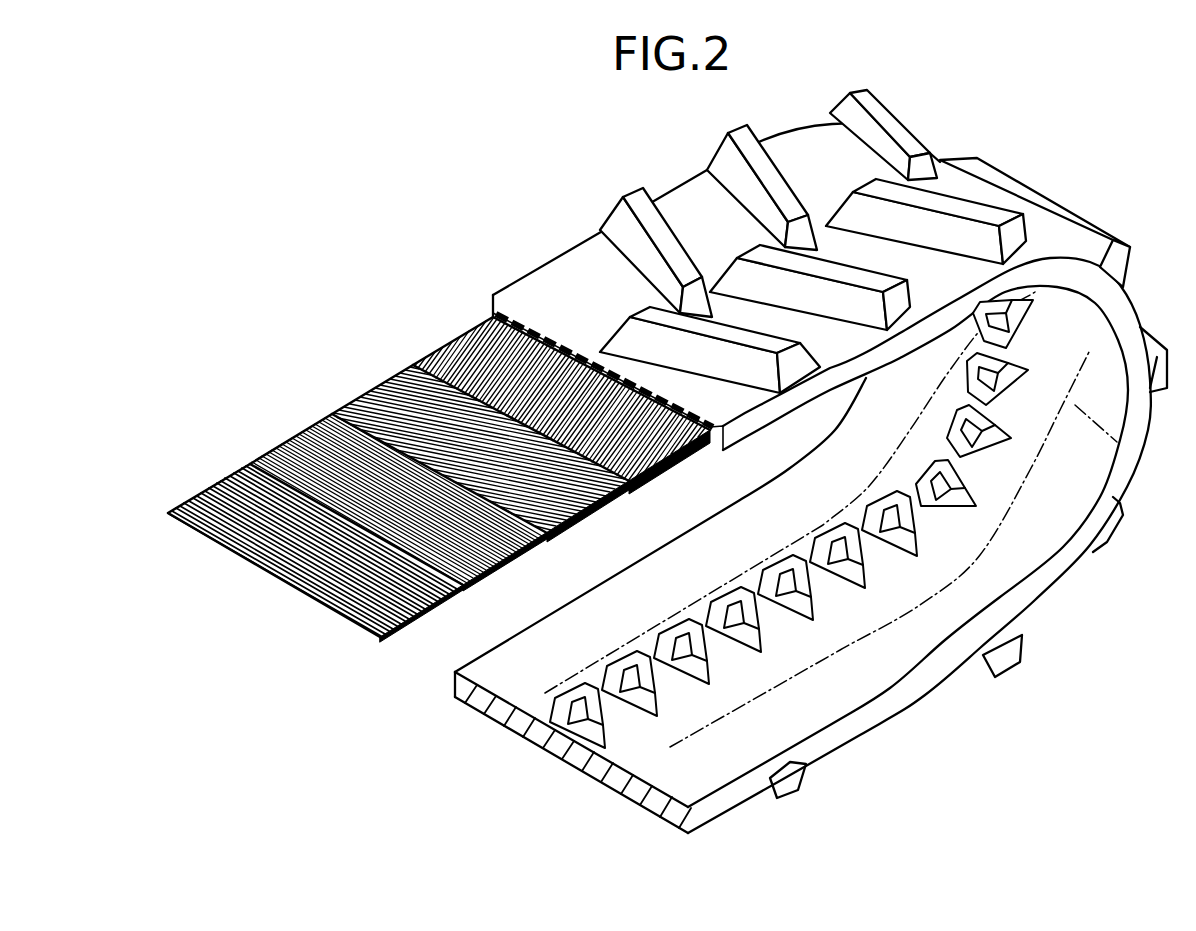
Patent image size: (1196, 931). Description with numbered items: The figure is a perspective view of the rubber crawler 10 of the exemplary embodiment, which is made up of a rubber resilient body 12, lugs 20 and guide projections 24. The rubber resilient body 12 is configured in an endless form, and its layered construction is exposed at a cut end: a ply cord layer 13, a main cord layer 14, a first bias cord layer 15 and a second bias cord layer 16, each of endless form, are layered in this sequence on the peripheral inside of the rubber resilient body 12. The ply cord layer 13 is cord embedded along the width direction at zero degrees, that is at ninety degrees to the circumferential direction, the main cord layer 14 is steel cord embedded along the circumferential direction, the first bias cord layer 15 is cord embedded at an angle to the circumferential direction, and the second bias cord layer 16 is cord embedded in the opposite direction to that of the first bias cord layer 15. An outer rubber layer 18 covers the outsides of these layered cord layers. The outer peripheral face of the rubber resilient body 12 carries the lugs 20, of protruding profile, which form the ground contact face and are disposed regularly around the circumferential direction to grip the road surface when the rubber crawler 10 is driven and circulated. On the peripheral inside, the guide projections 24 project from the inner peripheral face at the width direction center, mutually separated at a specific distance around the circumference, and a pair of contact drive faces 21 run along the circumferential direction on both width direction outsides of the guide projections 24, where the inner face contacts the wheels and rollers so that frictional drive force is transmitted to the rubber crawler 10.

The rubber crawler 10 is at (333, 163).
The rubber resilient body 12 is at (548, 254).
The ply cord layer 13 is at (210, 485).
The main cord layer 14 is at (302, 433).
The first bias cord layer 15 is at (386, 380).
The second bias cord layer 16 is at (452, 336).
The outer rubber layer 18 is at (488, 300).
The lugs 20 is at (633, 196).
The contact drive faces 21 is at (548, 695).
The guide projections 24 is at (617, 727).